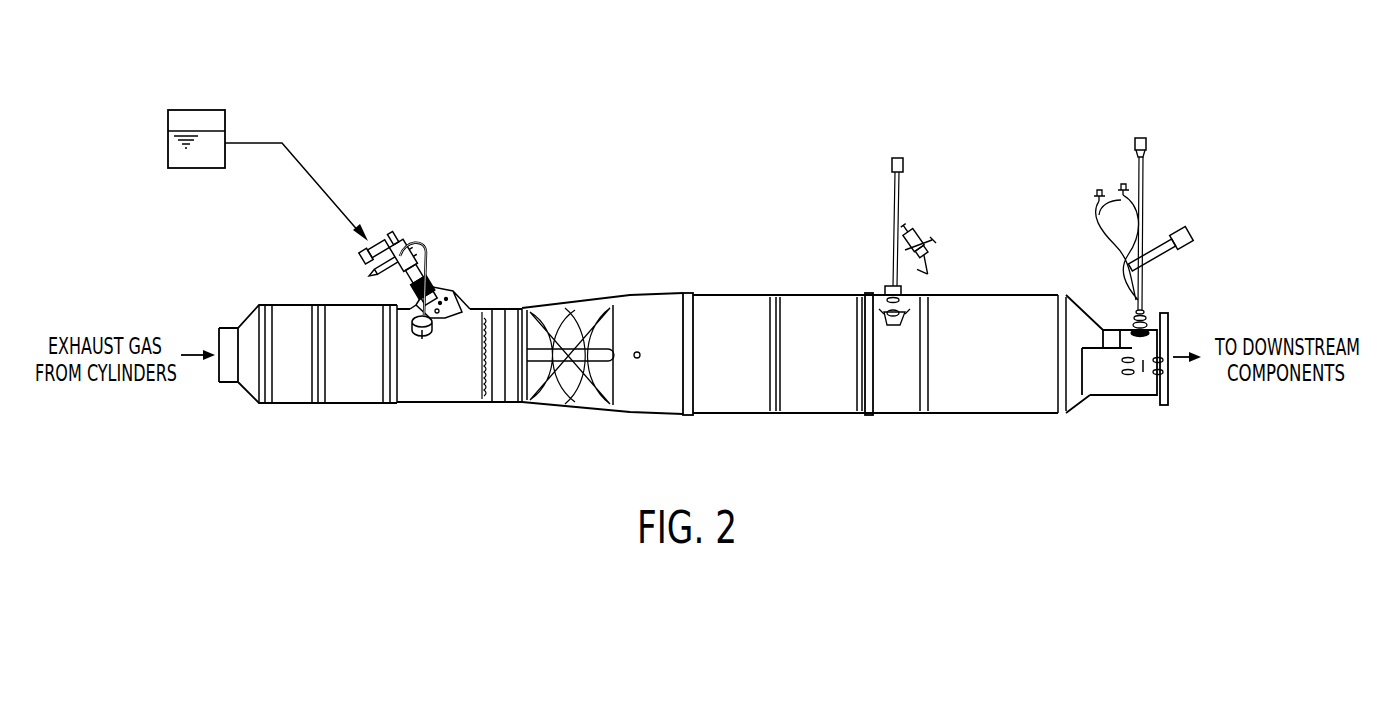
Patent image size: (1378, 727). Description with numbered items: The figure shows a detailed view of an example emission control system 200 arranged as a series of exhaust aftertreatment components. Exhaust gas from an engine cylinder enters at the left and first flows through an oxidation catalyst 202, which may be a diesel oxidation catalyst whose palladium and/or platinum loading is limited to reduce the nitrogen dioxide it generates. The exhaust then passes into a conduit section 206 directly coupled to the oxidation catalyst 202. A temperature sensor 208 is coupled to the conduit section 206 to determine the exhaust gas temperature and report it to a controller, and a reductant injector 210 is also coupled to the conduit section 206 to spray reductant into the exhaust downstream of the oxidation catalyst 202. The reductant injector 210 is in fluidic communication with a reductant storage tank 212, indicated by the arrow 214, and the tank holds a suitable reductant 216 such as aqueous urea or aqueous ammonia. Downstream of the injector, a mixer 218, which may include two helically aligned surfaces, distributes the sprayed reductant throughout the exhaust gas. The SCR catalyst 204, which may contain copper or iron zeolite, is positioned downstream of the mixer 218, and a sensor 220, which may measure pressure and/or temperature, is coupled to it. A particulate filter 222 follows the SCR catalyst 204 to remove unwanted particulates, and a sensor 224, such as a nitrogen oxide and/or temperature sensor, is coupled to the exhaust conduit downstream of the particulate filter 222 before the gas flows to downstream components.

The emission control system 200 is at (1254, 145).
The oxidation catalyst 202 is at (393, 411).
The SCR catalyst 204 is at (917, 421).
The conduit section 206 is at (437, 403).
The temperature sensor 208 is at (450, 313).
The reductant injector 210 is at (405, 292).
The reductant storage tank 212 is at (168, 120).
The arrow 214 is at (259, 142).
The reductant 216 is at (178, 155).
The mixer 218 is at (620, 411).
The sensor 220 is at (885, 287).
The particulate filter 222 is at (1067, 421).
The sensor 224 is at (1133, 312).